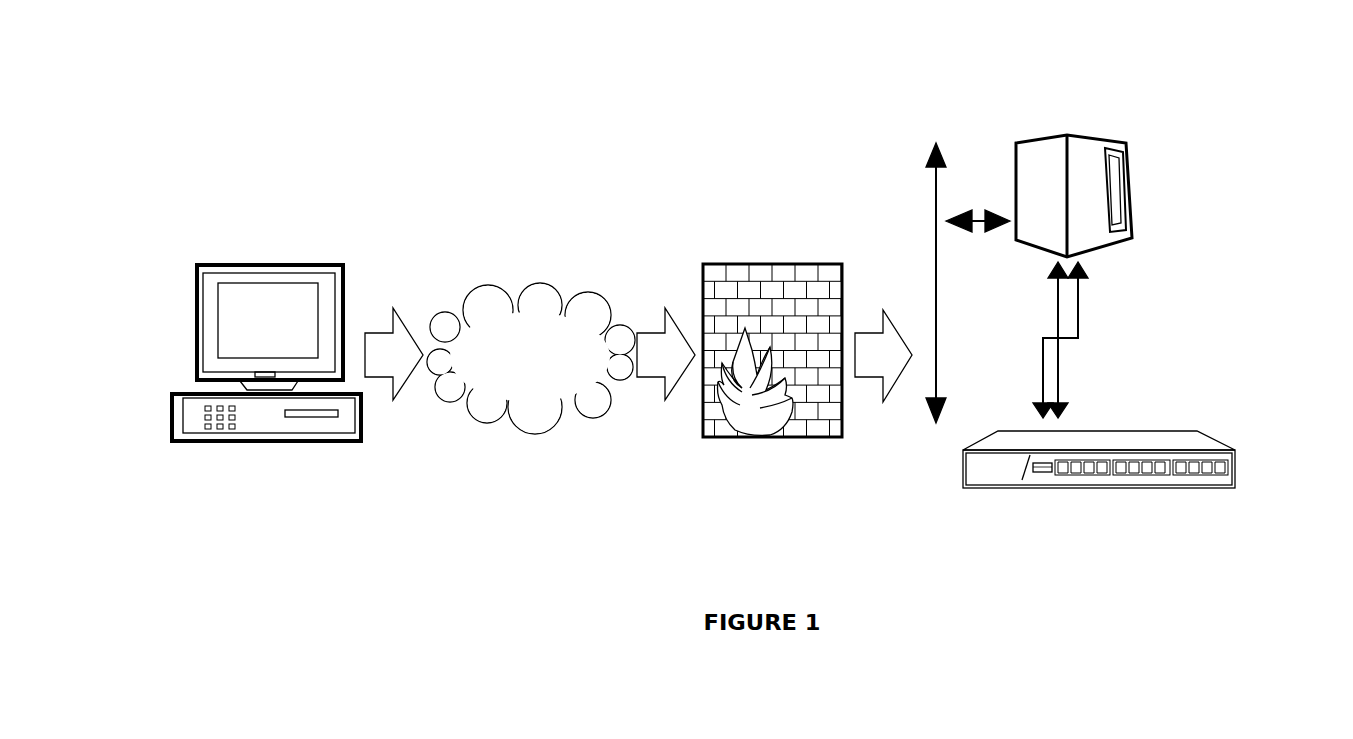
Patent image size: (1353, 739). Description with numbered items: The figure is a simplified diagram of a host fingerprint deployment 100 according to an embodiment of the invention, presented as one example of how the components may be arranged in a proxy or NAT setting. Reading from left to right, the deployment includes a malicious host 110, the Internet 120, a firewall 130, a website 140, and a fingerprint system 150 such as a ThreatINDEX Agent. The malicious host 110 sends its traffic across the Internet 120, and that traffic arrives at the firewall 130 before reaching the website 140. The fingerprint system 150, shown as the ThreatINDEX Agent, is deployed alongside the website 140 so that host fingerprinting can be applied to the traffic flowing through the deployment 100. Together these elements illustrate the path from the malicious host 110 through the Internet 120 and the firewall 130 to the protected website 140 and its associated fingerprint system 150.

The host fingerprint deployment system (proxy / NAT) 100 is at (1115, 67).
The malicious host 110 is at (268, 482).
The Internet 120 is at (541, 473).
The firewall 130 is at (785, 487).
The website 140 is at (1155, 422).
The fingerprint system 150 is at (1140, 245).